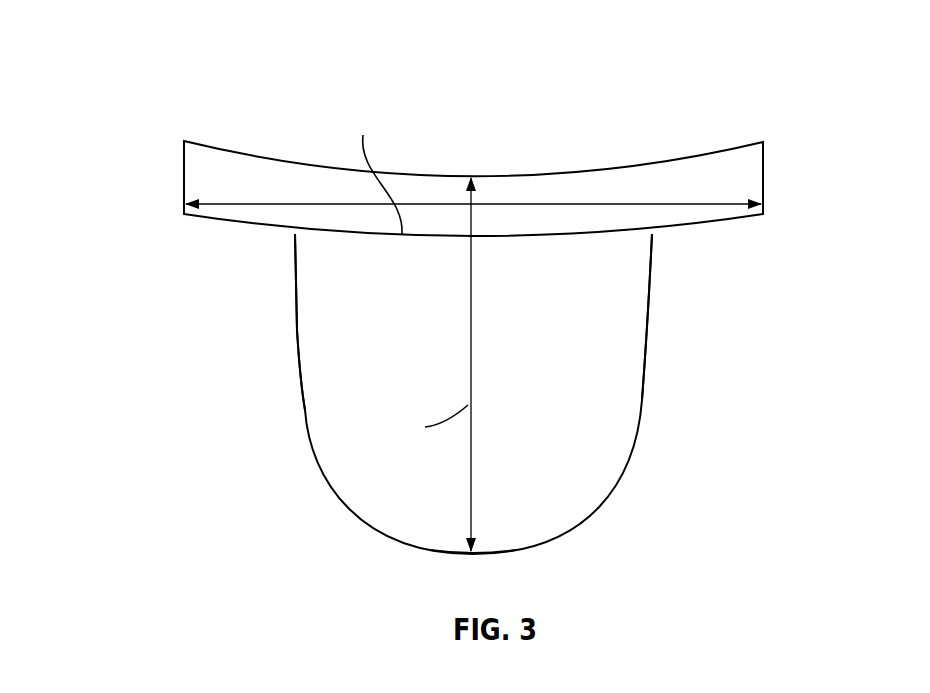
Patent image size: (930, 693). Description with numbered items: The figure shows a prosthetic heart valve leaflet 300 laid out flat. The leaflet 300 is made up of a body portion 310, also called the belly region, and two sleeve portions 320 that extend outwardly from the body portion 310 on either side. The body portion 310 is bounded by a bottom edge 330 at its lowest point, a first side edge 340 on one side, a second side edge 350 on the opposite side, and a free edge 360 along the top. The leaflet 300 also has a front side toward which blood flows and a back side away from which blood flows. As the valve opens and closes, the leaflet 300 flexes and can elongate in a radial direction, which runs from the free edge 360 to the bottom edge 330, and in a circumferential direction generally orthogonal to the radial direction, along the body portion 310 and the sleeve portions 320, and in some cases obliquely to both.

The prosthetic heart valve leaflet 300 is at (119, 82).
The body portion 310 is at (584, 306).
The sleeve portions 320 is at (215, 167).
The bottom edge 330 is at (456, 562).
The first side edge 340 is at (284, 356).
The second side edge 350 is at (656, 380).
The free edge 360 is at (516, 165).